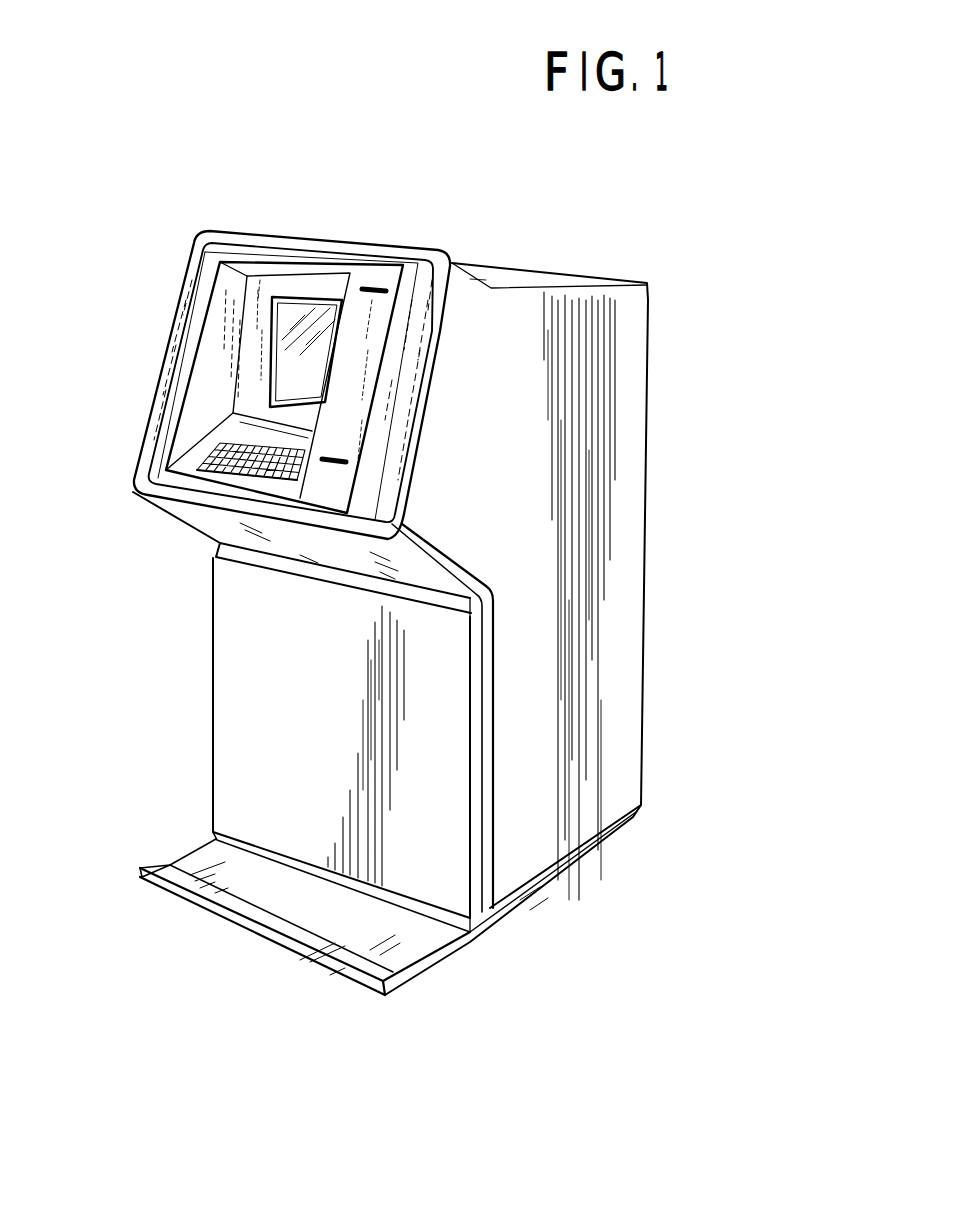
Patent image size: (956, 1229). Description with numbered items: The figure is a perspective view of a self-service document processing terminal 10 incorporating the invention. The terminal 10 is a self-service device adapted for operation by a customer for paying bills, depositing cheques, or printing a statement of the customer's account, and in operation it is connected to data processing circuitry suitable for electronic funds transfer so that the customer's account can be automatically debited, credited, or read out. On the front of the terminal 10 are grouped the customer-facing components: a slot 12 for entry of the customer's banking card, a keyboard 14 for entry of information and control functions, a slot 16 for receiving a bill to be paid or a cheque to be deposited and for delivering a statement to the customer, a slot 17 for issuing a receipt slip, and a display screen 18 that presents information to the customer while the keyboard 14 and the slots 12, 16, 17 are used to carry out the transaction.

The self-service document processing terminal 10 is at (142, 641).
The slot 12 is at (334, 458).
The keyboard 14 is at (232, 420).
The slot 16 is at (236, 430).
The slot 17 is at (378, 290).
The display screen 18 is at (290, 318).